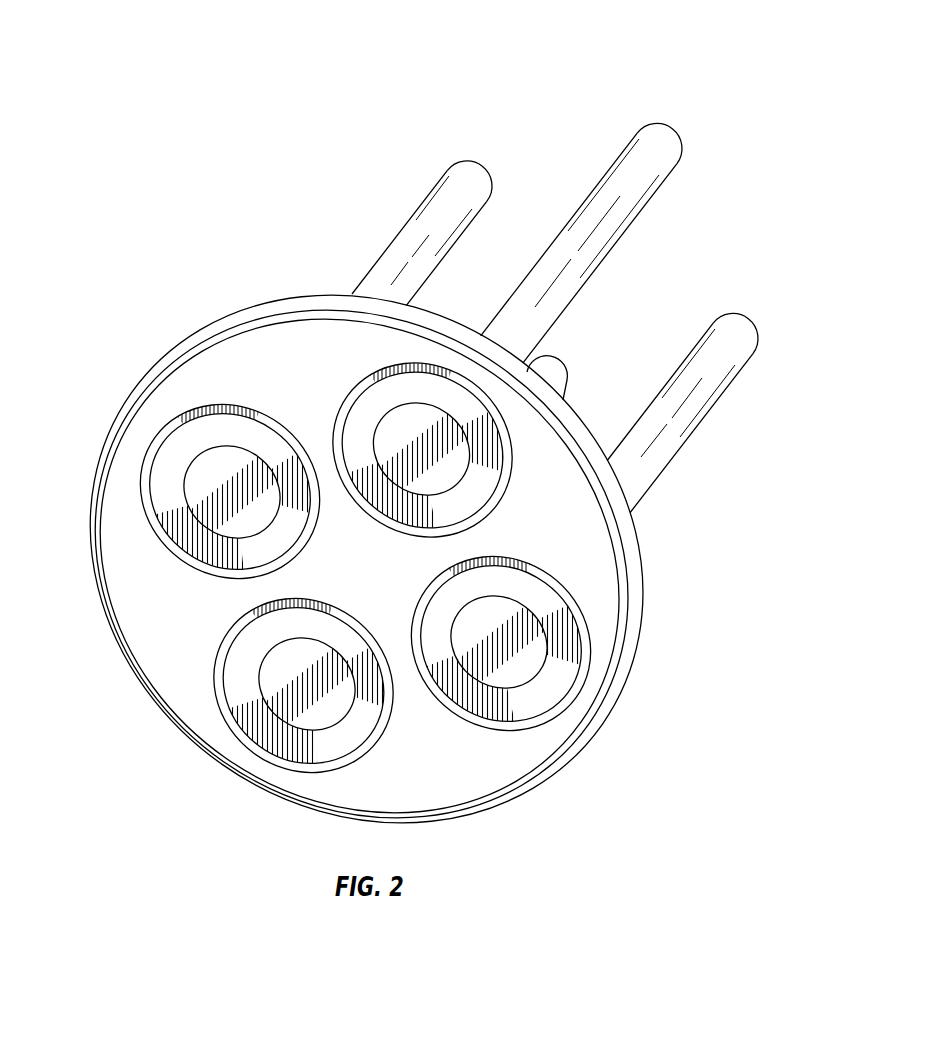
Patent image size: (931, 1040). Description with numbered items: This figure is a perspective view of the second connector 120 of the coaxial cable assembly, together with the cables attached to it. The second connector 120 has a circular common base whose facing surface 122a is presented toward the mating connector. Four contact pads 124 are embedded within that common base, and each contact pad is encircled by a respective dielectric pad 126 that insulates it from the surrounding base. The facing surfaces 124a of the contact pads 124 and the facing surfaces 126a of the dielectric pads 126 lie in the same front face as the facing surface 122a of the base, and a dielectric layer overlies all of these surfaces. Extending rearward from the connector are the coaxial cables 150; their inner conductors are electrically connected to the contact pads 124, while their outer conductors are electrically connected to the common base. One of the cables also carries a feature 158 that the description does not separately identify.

The second connector 120 is at (617, 780).
The facing surface of the common base 122a is at (137, 590).
The contact pads 124 is at (392, 445).
The facing surfaces of the contact pads 124a is at (443, 569).
The dielectric pads 126 is at (367, 403).
The facing surfaces of the dielectric pads 126a is at (158, 480).
The coaxial cables 150 is at (567, 357).
The pin shaft 158 is at (657, 443).